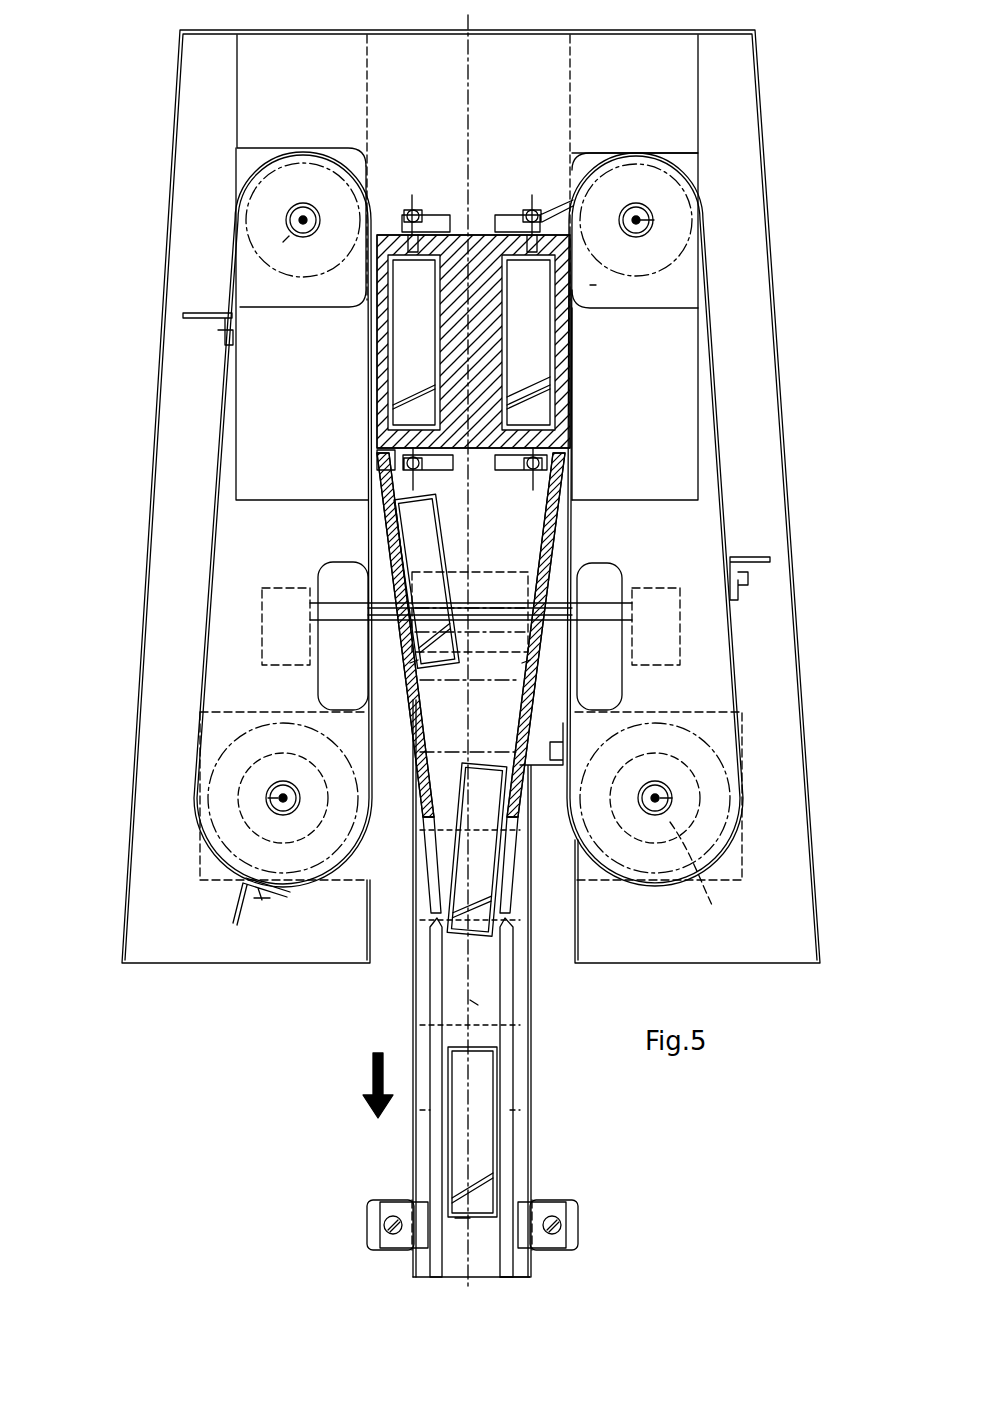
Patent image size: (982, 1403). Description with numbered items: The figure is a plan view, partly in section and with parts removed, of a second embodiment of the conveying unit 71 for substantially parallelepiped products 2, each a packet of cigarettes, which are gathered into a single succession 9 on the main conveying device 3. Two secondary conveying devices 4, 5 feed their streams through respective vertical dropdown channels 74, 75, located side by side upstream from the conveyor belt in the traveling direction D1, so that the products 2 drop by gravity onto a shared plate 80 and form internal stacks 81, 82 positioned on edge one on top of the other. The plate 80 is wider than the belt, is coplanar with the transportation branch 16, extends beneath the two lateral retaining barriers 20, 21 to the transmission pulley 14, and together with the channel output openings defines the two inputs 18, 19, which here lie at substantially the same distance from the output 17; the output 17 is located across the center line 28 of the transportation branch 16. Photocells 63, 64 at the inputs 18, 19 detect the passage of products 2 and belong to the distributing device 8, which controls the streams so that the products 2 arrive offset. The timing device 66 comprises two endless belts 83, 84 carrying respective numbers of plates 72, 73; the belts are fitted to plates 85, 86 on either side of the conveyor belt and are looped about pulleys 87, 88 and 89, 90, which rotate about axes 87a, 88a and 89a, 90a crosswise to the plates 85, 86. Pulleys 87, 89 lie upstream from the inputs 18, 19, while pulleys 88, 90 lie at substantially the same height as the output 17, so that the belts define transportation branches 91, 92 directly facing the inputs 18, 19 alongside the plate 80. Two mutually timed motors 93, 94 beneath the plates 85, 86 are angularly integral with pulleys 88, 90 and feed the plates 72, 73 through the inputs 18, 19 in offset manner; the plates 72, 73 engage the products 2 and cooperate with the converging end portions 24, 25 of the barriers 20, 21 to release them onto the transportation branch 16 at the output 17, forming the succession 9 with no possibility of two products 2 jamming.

The conveying unit 71 is at (783, 90).
The plate 85 is at (190, 102).
The plate 86 is at (725, 133).
The pulley 87 is at (268, 212).
The axis 87a is at (286, 233).
The pulley 89 is at (663, 192).
The axis 89a is at (660, 220).
The plates 72 is at (190, 313).
The plates 73 is at (753, 557).
The photocell 63 is at (413, 212).
The photocell 64 is at (530, 212).
The secondary conveying device 4 is at (442, 196).
The secondary conveying device 5 is at (478, 200).
The stack 82 is at (596, 285).
The distributing device 8 is at (740, 318).
The timing device 66 is at (722, 372).
The vertical dropdown channel 74 is at (406, 305).
The vertical dropdown channel 75 is at (543, 352).
The stack 81 is at (390, 355).
The product 2 is at (523, 375).
The input 18 is at (377, 462).
The input 19 is at (560, 478).
The plate 80 is at (510, 513).
The transmission pulley 14 is at (505, 560).
The transportation branch 91 is at (366, 588).
The transportation branch 92 is at (568, 592).
The end portion 24 is at (412, 663).
The end portion 25 is at (525, 663).
The lateral retaining barrier 20 is at (400, 692).
The lateral retaining barrier 21 is at (538, 708).
The endless belt 83 is at (192, 672).
The endless belt 84 is at (747, 690).
The pulley 88 is at (215, 798).
The axis 88a is at (275, 798).
The pulley 90 is at (700, 828).
The axis 90a is at (665, 798).
The motor 93 is at (200, 872).
The motor 94 is at (708, 876).
The output 17 is at (442, 875).
The center line 28 is at (475, 1008).
The transportation branch 16 is at (522, 1148).
The succession 9 is at (463, 1222).
The main conveying device 3 is at (516, 1284).
The traveling direction D1 is at (362, 1082).